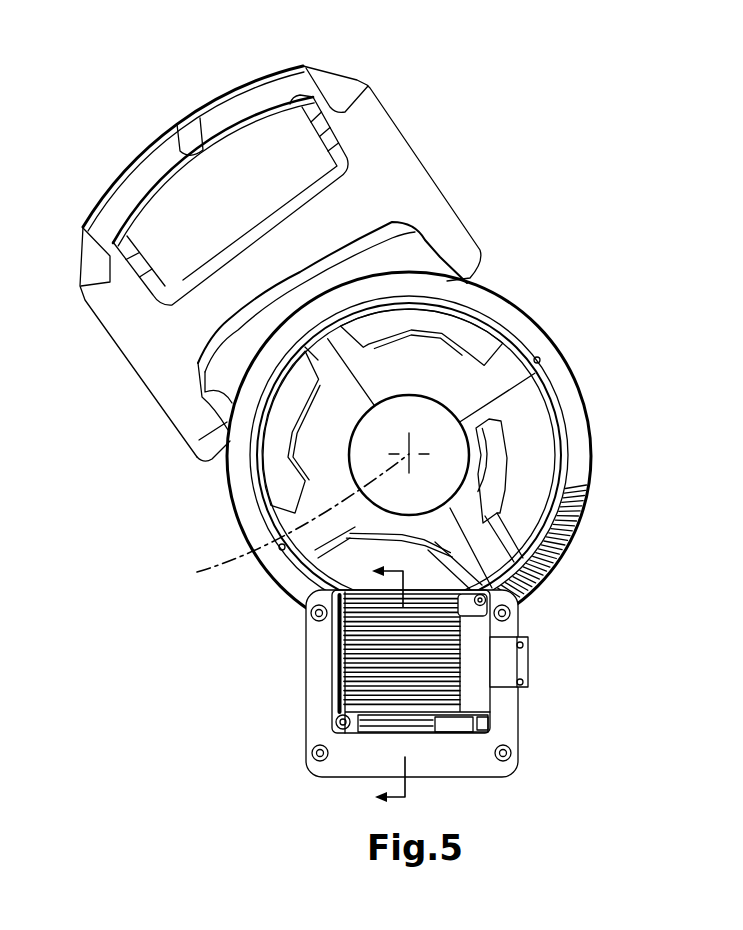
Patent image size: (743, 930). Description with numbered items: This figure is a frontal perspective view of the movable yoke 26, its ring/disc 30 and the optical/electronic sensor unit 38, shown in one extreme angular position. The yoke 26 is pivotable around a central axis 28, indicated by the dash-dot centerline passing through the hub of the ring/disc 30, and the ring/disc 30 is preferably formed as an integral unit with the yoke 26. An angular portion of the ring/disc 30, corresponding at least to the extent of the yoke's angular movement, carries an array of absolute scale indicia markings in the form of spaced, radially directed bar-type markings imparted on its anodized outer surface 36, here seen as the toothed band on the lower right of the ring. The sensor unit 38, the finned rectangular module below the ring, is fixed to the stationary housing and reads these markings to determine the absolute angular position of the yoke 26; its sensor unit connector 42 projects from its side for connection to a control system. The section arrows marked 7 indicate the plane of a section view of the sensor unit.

The yoke 26 is at (413, 197).
The ring/disc 30 is at (548, 288).
The outer surface 36 is at (566, 385).
The central axis 28 is at (294, 510).
The optical/electronic sensor unit 38 is at (460, 643).
The sensor unit connector 42 is at (515, 660).
The section line 7- 7 is at (379, 684).